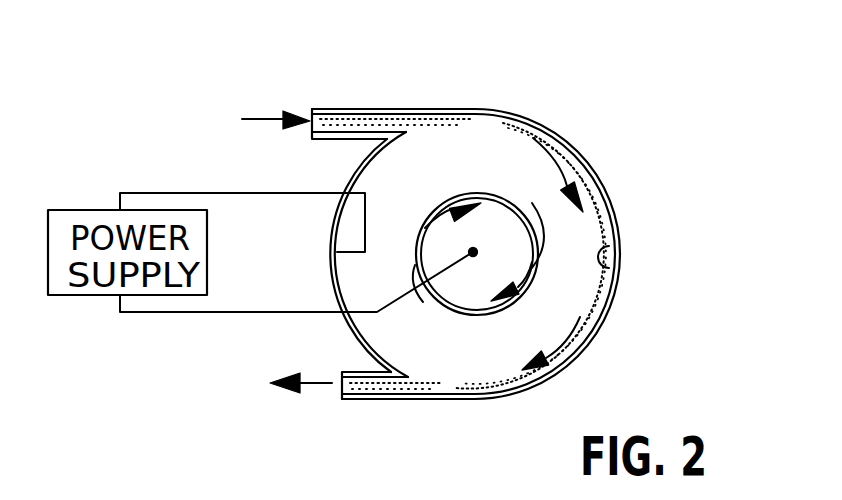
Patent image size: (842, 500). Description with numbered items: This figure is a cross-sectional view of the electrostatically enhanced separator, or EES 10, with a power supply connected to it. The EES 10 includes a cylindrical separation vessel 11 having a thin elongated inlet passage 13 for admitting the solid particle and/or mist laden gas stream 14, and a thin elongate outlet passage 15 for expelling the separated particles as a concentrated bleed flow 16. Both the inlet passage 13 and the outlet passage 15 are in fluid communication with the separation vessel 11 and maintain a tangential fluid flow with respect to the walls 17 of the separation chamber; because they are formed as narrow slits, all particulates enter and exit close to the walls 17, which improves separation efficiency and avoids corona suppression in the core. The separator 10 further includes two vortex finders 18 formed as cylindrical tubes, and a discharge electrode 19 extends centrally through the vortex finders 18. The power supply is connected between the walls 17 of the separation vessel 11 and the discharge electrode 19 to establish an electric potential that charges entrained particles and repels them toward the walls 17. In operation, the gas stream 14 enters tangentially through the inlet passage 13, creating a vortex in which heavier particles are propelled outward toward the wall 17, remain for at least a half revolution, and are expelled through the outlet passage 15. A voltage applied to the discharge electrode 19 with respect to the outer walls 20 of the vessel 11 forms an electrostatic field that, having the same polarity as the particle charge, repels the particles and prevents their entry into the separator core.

The EES 10 is at (598, 125).
The cylindrical separation vessel 11 is at (560, 138).
The inlet passage 13 is at (349, 118).
The gas stream 14 is at (267, 117).
The outlet passage 15 is at (352, 396).
The bleed flow 16 is at (308, 385).
The walls 17 is at (597, 263).
The vortex finders 18 is at (480, 193).
The discharge electrode 19 is at (473, 252).
The outer walls 20 is at (598, 333).